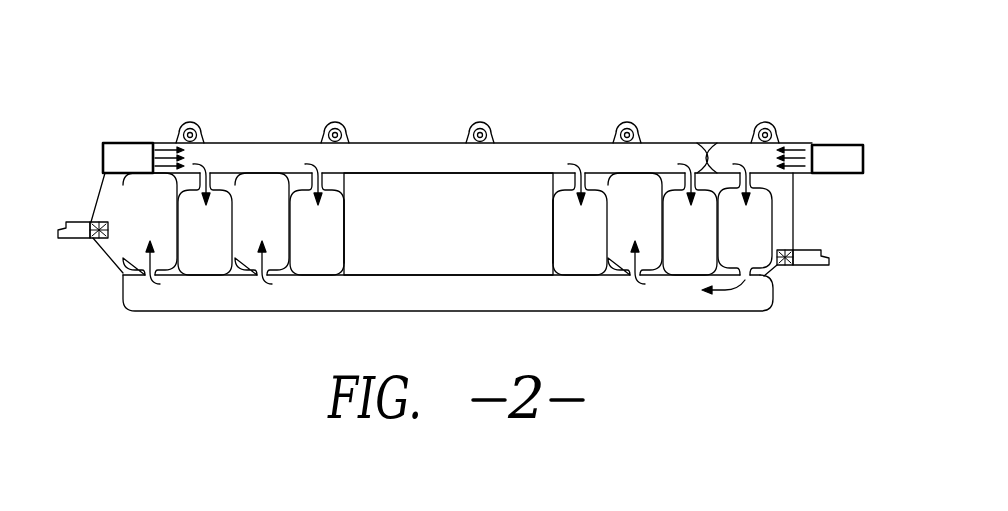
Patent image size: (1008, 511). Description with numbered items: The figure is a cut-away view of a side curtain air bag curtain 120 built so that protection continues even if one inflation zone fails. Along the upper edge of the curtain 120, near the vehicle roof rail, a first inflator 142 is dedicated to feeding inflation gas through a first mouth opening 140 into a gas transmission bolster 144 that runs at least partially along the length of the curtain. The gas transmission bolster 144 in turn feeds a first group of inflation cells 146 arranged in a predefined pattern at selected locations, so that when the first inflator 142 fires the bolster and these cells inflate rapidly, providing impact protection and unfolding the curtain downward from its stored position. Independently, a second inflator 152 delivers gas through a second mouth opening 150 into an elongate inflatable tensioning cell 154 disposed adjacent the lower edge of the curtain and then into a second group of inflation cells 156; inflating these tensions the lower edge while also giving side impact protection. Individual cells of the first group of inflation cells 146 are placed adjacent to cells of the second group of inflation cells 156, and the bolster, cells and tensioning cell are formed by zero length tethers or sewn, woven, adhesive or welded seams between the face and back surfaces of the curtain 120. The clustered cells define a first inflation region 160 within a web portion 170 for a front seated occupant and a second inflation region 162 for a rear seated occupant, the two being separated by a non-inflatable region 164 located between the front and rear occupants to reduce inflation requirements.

The air bag curtain 120 is at (460, 184).
The first mouth opening 140 is at (160, 148).
The first inflator 142 is at (122, 148).
The gas transmission bolster 144 is at (428, 148).
The first group of inflation cells 146 is at (226, 256).
The second mouth opening 150 is at (800, 150).
The second inflator 152 is at (833, 155).
The elongate inflatable tensioning cell 154 is at (672, 313).
The second group of inflation cells 156 is at (172, 223).
The first inflation region 160 is at (355, 206).
The second inflation region 162 is at (544, 213).
The non-inflatable region 164 is at (465, 242).
The web portion 170 is at (97, 259).